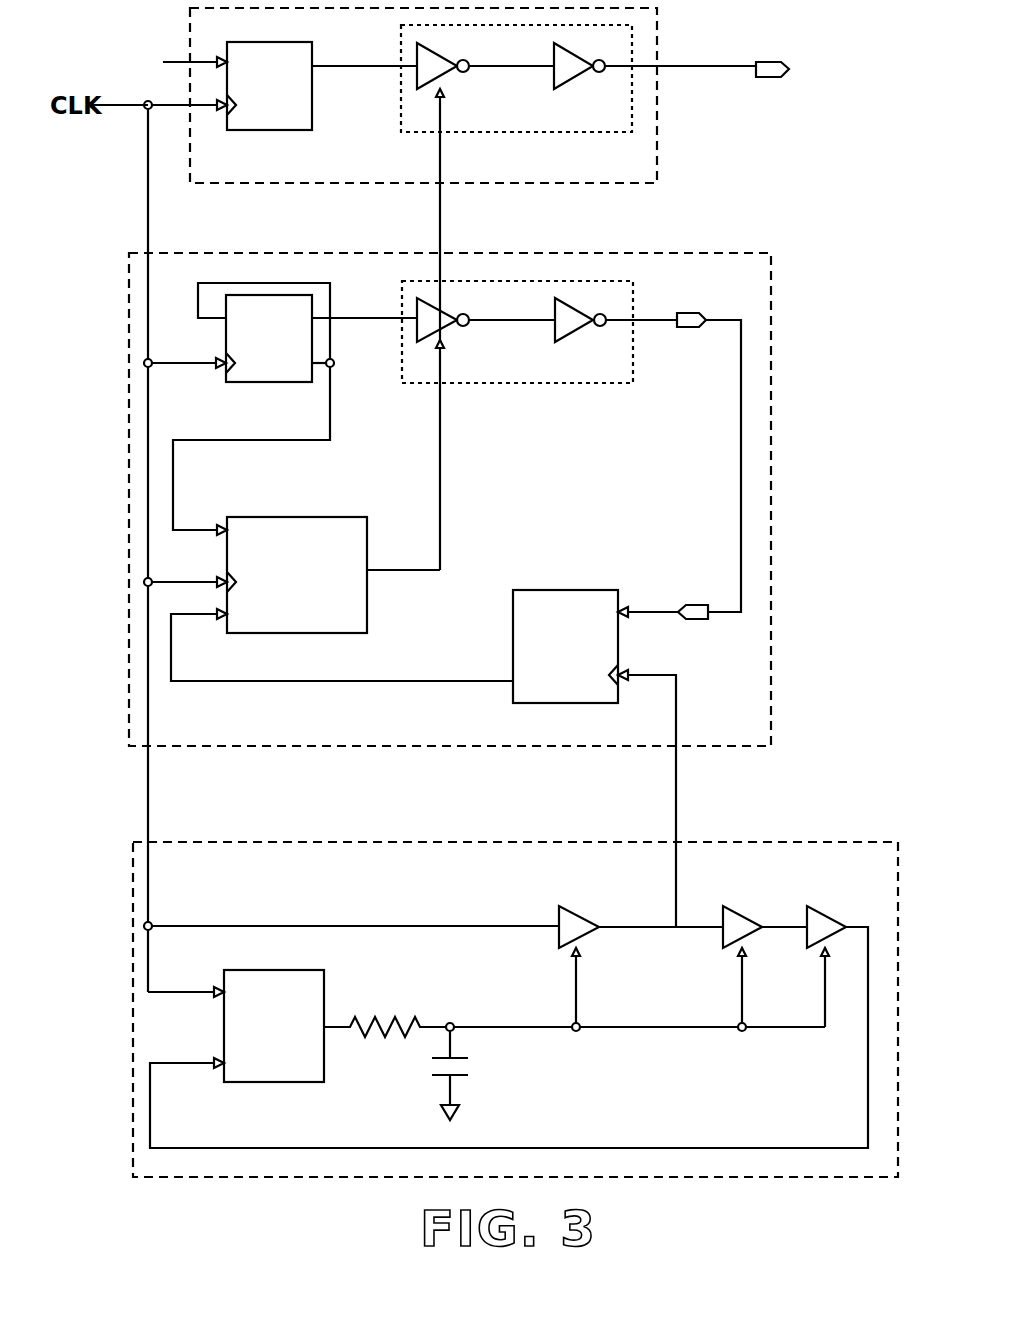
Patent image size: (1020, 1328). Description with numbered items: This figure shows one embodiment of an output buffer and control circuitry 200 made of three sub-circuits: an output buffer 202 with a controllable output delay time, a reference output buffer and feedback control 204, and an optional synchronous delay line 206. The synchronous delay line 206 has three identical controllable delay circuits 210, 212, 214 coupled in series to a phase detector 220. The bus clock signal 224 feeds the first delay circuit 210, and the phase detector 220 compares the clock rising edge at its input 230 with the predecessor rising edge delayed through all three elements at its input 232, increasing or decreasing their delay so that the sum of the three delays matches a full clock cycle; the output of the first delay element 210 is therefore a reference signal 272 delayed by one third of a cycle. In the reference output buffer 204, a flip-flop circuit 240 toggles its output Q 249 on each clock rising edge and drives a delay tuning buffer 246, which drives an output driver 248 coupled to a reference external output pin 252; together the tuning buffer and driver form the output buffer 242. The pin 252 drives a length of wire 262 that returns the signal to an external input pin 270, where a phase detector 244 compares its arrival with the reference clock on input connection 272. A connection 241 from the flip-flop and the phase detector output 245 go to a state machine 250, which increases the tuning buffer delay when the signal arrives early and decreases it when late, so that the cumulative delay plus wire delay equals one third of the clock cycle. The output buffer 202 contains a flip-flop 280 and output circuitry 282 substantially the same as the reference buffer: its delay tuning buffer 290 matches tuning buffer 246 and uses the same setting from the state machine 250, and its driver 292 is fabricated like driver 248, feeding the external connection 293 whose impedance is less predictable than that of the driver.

The output buffer and control circuitry 200 is at (828, 158).
The output buffer 202 is at (658, 150).
The reference output buffer and feedback control 204 is at (772, 474).
The synchronous delay line 206 is at (872, 842).
The controllable delay circuit 210 is at (583, 917).
The controllable delay circuit 212 is at (745, 917).
The controllable delay circuit 214 is at (825, 917).
The phase detector 220 is at (298, 1084).
The bus clock signal 224 is at (120, 104).
The input 230 is at (183, 984).
The input 232 is at (186, 1066).
The flip-flop circuit 240 is at (262, 384).
The flip-flop output line to state machine 241 is at (174, 466).
The output buffer 242 is at (543, 385).
The phase detector 244 is at (548, 588).
The phase detector output line 245 is at (460, 680).
The delay tuning buffer 246 is at (452, 326).
The output driver 248 is at (573, 332).
The output Q 249 is at (365, 317).
The state machine 250 is at (316, 516).
The reference external output pin 252 is at (689, 330).
The length of wire 262 is at (741, 476).
The external input pin 270 is at (696, 604).
The reference signal 272 is at (664, 676).
The flip-flop 280 is at (258, 132).
The output circuitry 282 is at (543, 134).
The delay tuning buffer 290 is at (455, 72).
The driver 292 is at (573, 78).
The external connection 293 is at (765, 62).